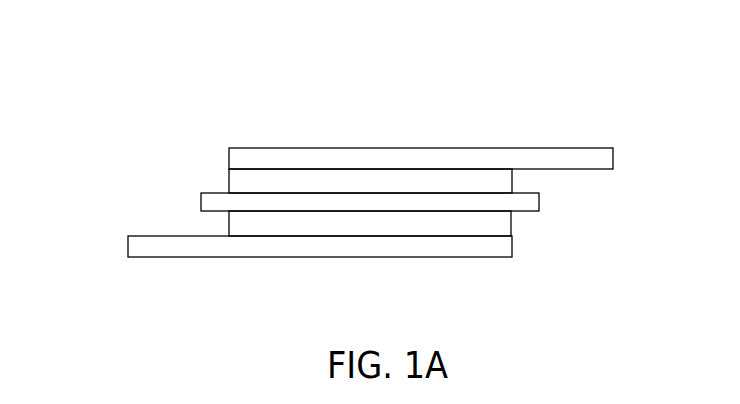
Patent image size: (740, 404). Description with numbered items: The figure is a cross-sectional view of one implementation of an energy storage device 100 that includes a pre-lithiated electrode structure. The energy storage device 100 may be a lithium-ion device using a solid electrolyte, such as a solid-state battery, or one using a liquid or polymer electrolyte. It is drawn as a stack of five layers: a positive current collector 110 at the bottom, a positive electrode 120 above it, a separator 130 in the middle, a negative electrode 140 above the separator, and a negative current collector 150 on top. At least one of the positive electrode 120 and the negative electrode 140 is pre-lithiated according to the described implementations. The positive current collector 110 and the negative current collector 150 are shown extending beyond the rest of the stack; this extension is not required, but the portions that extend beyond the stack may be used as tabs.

The energy storage device 100 is at (148, 67).
The positive current collector 110 is at (193, 257).
The positive electrode 120 is at (511, 225).
The separator 130 is at (200, 203).
The negative electrode 140 is at (512, 178).
The negative current collector 150 is at (413, 148).